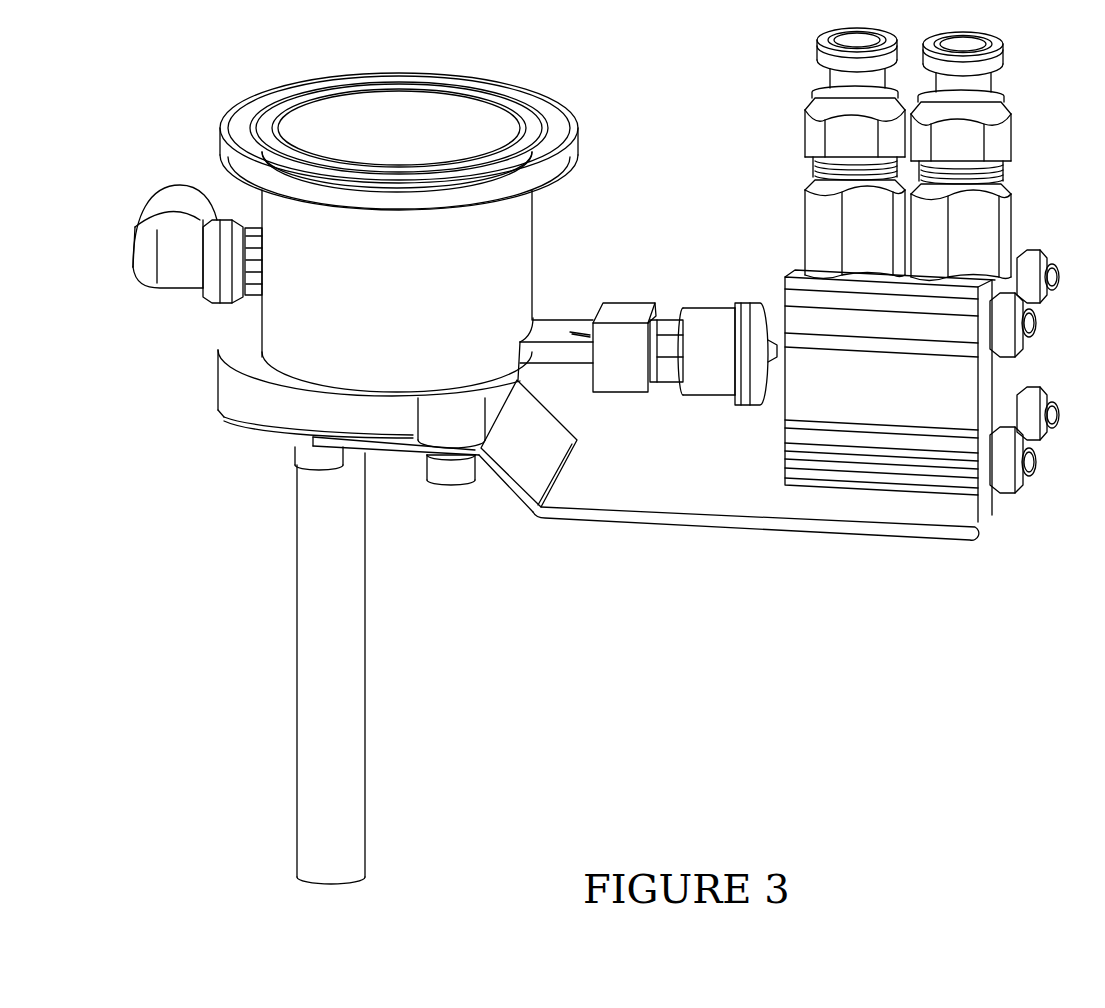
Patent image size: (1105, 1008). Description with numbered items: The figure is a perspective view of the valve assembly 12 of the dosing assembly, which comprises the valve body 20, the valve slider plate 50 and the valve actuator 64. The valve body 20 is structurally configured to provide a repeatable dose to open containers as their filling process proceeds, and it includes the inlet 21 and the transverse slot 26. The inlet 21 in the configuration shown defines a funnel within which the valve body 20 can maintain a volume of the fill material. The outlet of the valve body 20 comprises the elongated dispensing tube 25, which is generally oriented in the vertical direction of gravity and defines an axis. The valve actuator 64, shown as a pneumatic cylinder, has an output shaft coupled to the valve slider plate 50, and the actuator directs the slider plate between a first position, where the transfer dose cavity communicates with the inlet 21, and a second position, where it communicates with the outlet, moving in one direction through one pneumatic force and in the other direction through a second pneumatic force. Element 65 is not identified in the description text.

The valve assembly 12 is at (172, 527).
The valve body 20 is at (533, 243).
The inlet 21 is at (405, 107).
The elongated dispensing tube 25 is at (297, 668).
The transverse slot 26 is at (214, 311).
The valve slider plate 50 is at (643, 296).
The valve actuator 64 is at (1035, 186).
The fitting 65 is at (712, 408).